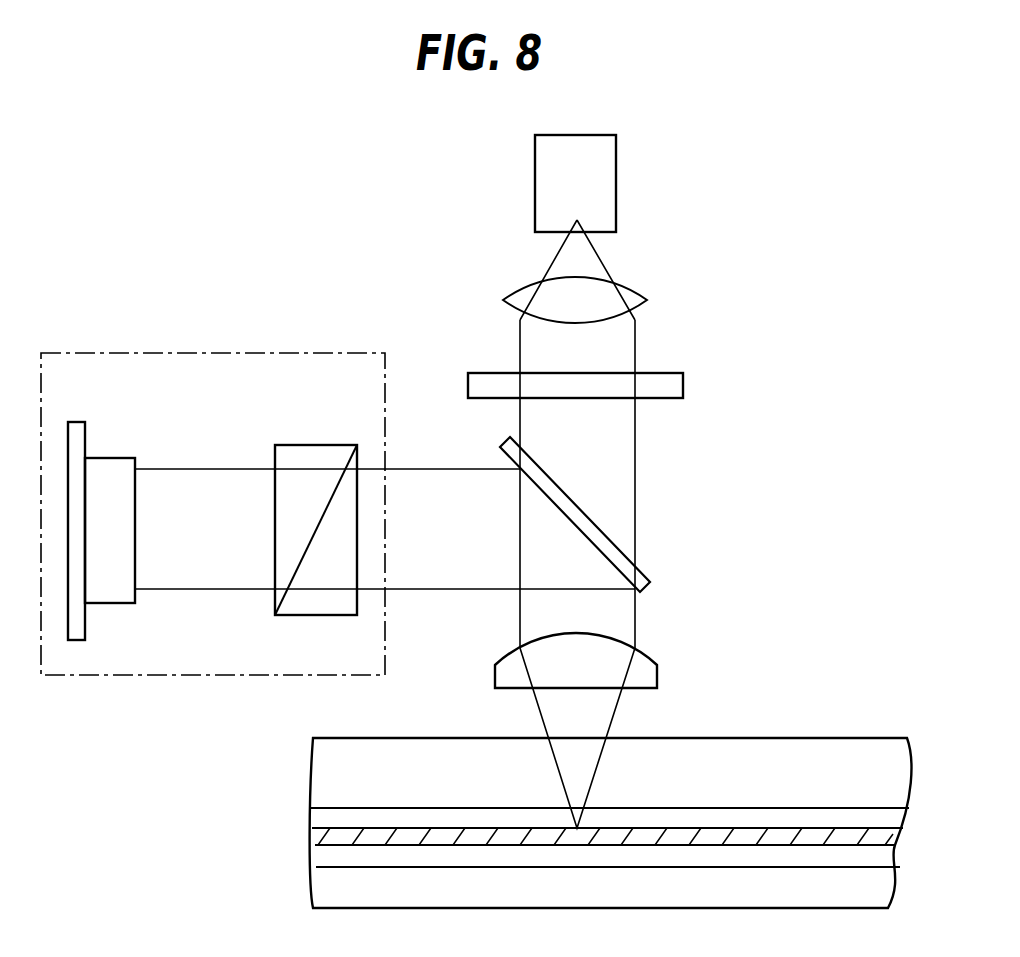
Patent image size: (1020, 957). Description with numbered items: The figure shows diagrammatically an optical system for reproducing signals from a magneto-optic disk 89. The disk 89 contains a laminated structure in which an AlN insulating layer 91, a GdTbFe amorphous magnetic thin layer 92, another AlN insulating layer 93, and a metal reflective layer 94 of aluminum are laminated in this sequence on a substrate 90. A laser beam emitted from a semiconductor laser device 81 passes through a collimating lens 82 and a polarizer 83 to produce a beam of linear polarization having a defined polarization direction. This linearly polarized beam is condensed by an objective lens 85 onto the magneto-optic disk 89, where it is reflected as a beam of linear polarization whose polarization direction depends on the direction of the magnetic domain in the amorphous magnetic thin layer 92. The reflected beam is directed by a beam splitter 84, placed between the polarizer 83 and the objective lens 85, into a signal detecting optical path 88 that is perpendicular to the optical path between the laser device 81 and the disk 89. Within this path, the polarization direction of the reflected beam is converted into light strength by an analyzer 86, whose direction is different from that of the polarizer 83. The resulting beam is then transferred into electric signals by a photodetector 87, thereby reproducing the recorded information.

The semiconductor laser device 81 is at (571, 135).
The collimating lens 82 is at (632, 300).
The polarizer 83 is at (653, 373).
The beam splitter 84 is at (647, 573).
The objective lens 85 is at (648, 653).
The analyzer 86 is at (305, 445).
The photodetector 87 is at (102, 455).
The signal detecting optical path 88 is at (277, 353).
The magneto-optic disk 89 is at (809, 733).
The substrate 90 is at (325, 760).
The AlN insulating layer 91 is at (322, 818).
The GdTbFe amorphous magnetic thin layer 92 is at (322, 838).
The AlN insulating layer 93 is at (322, 858).
The metal reflective layer 94 is at (325, 888).